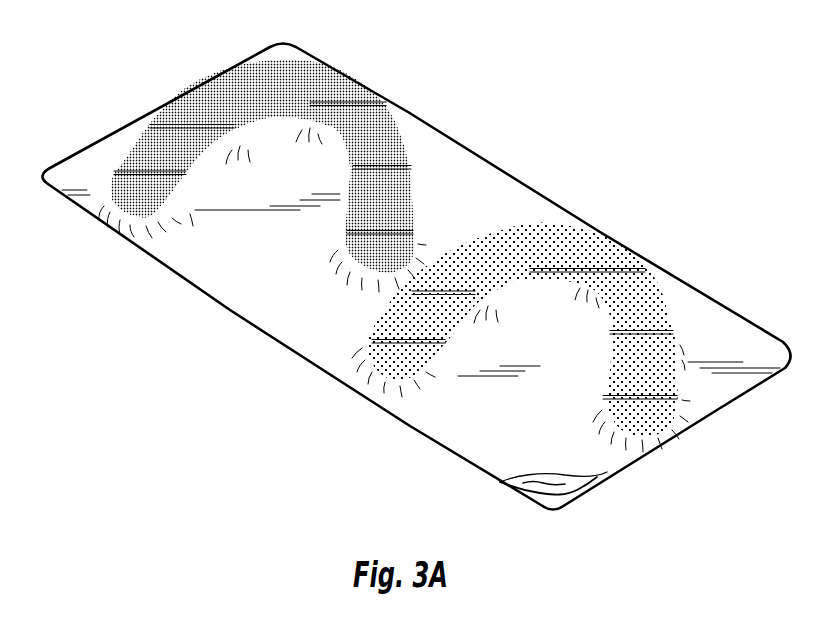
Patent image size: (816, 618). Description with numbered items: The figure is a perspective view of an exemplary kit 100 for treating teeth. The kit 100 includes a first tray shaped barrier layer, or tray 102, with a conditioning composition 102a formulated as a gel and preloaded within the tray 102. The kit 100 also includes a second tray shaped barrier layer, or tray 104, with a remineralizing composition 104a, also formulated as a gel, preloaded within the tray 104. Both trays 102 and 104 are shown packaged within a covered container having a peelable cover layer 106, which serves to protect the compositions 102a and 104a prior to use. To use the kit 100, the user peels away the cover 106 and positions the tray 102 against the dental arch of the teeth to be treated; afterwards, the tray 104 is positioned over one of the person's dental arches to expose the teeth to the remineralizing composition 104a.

The kit 100 is at (543, 128).
The first tray shaped barrier layer 102 is at (372, 77).
The conditioning composition 102a is at (390, 103).
The second tray shaped barrier layer 104 is at (621, 232).
The remineralizing composition 104a is at (647, 274).
The peelable cover layer 106 is at (607, 472).